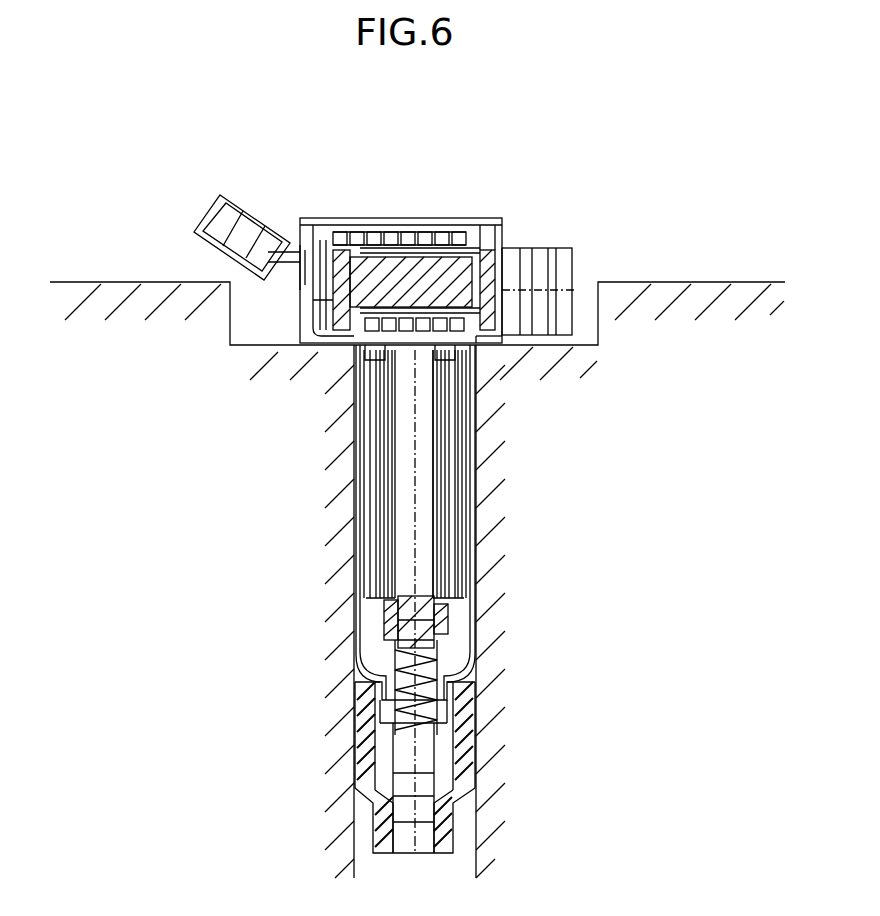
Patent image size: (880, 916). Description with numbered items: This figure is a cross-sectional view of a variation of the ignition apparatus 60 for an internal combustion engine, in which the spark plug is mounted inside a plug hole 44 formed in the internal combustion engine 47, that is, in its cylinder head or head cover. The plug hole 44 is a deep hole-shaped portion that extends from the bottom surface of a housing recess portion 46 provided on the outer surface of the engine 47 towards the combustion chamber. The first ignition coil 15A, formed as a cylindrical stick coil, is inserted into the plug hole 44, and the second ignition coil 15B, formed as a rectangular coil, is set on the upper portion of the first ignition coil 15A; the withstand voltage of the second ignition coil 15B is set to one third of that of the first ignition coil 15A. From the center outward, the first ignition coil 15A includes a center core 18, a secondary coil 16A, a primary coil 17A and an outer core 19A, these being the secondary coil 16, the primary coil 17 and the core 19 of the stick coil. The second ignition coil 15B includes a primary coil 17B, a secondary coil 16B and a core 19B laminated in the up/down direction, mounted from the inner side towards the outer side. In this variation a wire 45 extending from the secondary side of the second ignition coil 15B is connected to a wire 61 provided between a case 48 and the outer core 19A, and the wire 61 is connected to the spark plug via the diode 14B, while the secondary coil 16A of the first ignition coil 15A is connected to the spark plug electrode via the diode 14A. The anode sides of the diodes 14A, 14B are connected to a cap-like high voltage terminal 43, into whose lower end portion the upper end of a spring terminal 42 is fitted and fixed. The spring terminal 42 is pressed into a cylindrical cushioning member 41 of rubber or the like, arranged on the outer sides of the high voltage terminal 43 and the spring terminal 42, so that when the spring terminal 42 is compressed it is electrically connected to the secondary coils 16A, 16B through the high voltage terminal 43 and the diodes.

The second ignition coil 15B is at (605, 136).
The first ignition coil 15A is at (625, 520).
The primary coil 17 is at (372, 228).
The primary coil 17A is at (489, 474).
The primary coil 17B is at (396, 195).
The secondary coil 16 is at (428, 227).
The secondary coil 16A is at (495, 474).
The secondary coil 16B is at (414, 195).
The core 19 is at (478, 408).
The outer core 19A is at (528, 474).
The core 19B is at (470, 268).
The center core 18 is at (425, 500).
The ignition coil 60 is at (604, 234).
The internal combustion engine 47 is at (733, 282).
The housing recess portion 46 is at (272, 293).
The wire 45 is at (478, 372).
The wire 61 is at (478, 548).
The case 48 is at (478, 592).
The diode 14A is at (385, 626).
The diode 14B is at (448, 622).
The high voltage terminal 43 is at (395, 665).
The spring terminal 42 is at (478, 703).
The cylindrical cushioning member 41 is at (478, 735).
The plug hole 44 is at (354, 820).